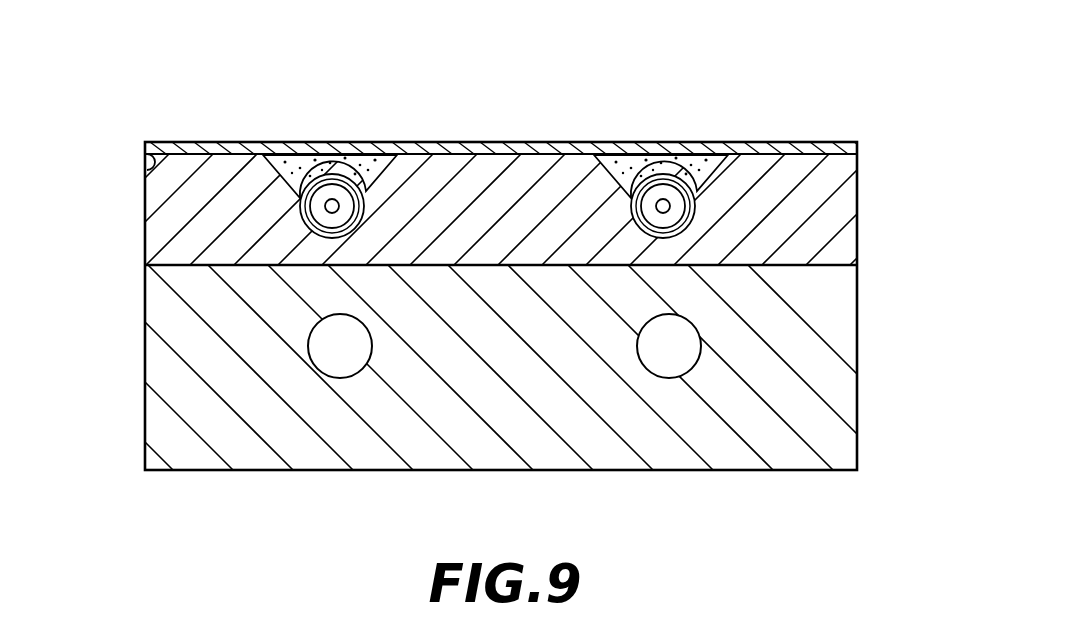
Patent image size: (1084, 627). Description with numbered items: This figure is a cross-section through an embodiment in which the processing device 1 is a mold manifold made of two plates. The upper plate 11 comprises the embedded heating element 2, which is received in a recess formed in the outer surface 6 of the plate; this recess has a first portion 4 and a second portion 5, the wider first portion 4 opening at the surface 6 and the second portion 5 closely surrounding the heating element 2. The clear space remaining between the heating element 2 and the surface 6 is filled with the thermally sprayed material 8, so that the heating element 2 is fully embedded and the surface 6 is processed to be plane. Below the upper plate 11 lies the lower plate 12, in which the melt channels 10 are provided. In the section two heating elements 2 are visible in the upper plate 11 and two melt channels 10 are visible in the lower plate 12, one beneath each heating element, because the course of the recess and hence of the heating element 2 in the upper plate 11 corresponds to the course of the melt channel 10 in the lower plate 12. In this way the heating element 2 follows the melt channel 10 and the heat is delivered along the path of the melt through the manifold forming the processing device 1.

The processing device 1 is at (138, 130).
The heating element 2 is at (300, 207).
The first portion 4 is at (275, 186).
The second portion 5 is at (318, 222).
The surface 6 is at (145, 166).
The thermally sprayed material 8 is at (350, 167).
The melt channel 10 is at (337, 343).
The upper plate 11 is at (802, 175).
The lower plate 12 is at (827, 442).